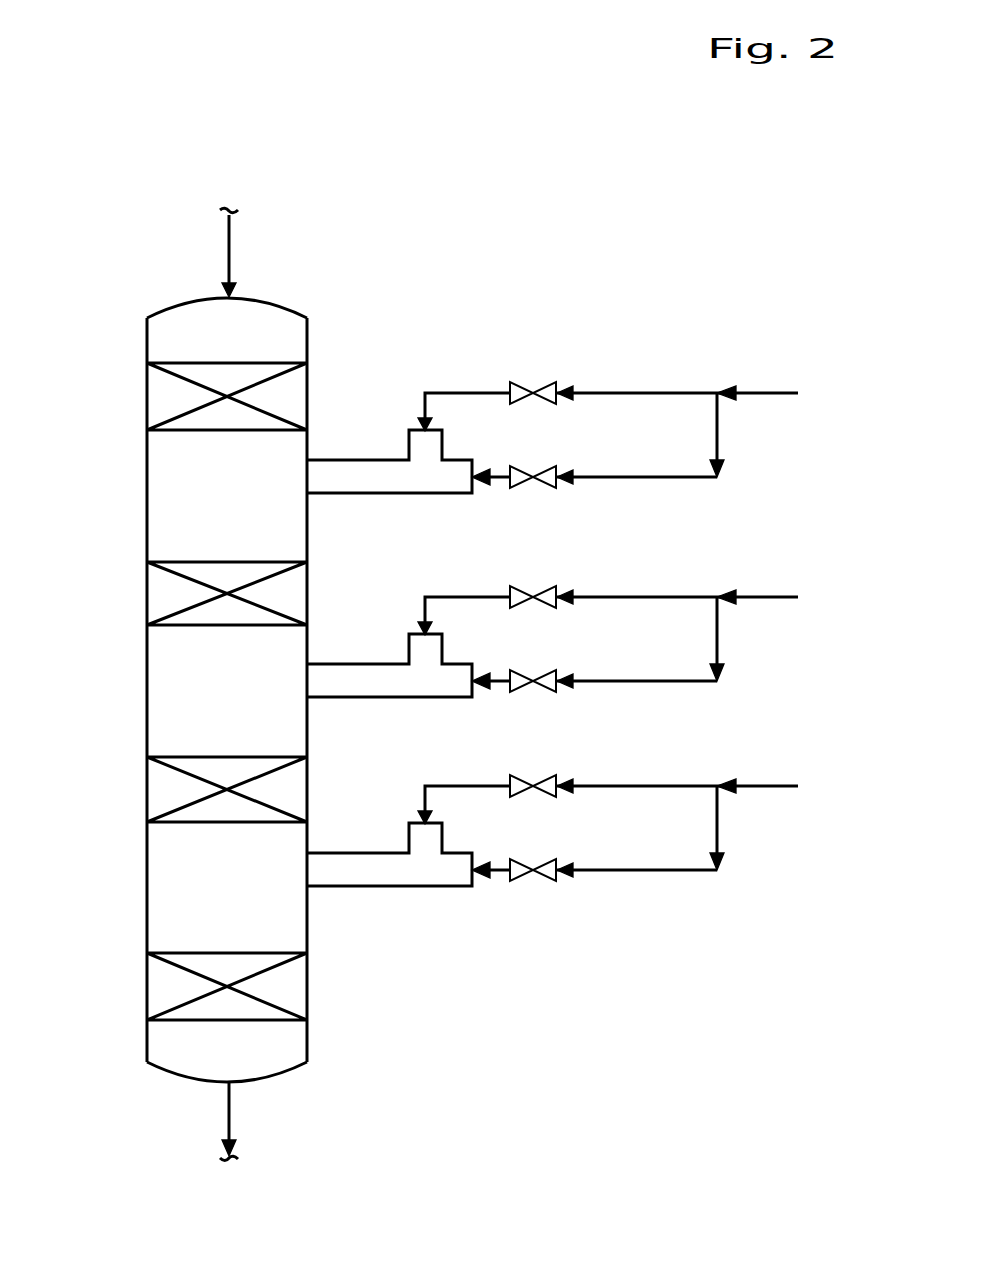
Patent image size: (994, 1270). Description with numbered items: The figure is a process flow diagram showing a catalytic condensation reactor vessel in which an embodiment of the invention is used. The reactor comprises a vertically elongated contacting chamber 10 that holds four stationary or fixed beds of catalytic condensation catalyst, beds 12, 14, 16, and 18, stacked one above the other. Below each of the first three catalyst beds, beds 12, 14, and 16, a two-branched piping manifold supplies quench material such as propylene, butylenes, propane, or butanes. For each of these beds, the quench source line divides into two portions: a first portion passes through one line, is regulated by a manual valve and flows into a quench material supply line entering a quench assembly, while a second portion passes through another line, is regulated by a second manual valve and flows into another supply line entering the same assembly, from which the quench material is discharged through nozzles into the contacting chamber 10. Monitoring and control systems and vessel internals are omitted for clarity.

The contacting chamber 10 is at (338, 312).
The catalyst bed 12 is at (160, 390).
The catalyst bed 14 is at (160, 598).
The catalyst bed 16 is at (157, 785).
The catalyst bed 18 is at (163, 982).